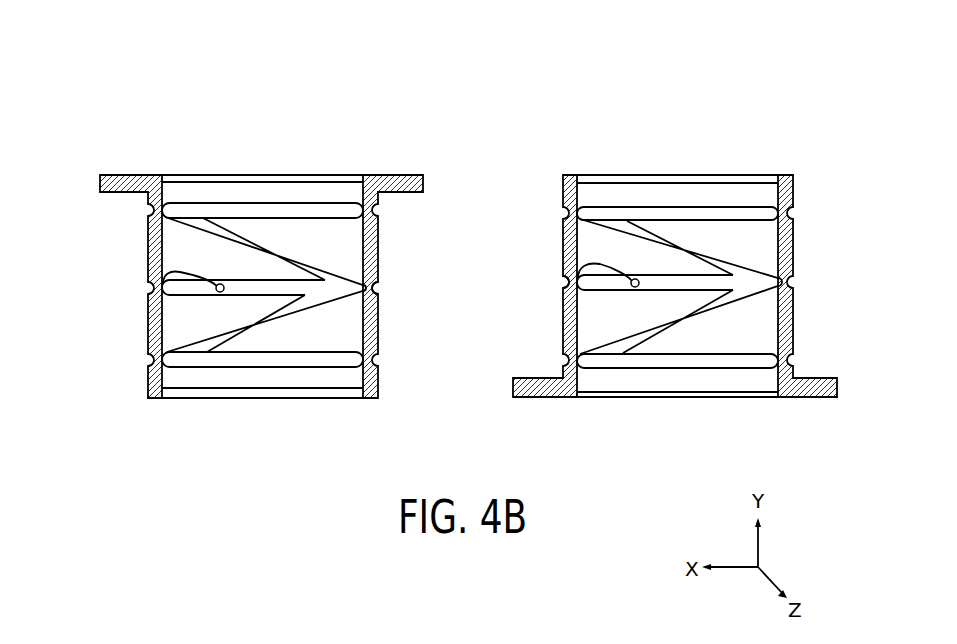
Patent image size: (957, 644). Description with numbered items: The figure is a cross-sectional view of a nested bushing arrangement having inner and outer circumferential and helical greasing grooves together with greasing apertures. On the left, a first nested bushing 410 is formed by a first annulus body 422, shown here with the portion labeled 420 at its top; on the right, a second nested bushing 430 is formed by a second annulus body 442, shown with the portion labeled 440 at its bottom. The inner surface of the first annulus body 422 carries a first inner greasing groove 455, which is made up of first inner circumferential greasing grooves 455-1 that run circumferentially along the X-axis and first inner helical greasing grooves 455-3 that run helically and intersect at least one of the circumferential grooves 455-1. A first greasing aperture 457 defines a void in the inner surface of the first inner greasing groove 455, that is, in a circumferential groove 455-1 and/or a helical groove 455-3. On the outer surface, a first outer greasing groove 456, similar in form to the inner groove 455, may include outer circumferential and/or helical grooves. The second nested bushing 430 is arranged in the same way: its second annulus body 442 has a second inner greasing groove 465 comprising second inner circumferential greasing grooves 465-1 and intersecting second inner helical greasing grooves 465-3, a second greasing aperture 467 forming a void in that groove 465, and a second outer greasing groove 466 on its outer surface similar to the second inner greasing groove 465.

The first nested bushing 410 is at (149, 118).
The housing 420 is at (267, 176).
The first annulus body 422 is at (147, 375).
The second nested bushing 430 is at (778, 147).
The housing base 440 is at (678, 397).
The second annulus body 442 is at (788, 348).
The first inner greasing groove 455 is at (257, 376).
The first inner circumferential greasing groove 455-1 is at (286, 210).
The first inner helical greasing groove 455-3 is at (300, 260).
The first outer greasing groove 456 is at (378, 288).
The first greasing aperture 457 is at (165, 283).
The second inner greasing groove 465 is at (692, 190).
The second inner circumferential greasing groove 465-1 is at (770, 213).
The second inner helical greasing groove 465-3 is at (747, 267).
The second outer greasing groove 466 is at (563, 285).
The second greasing aperture 467 is at (577, 276).